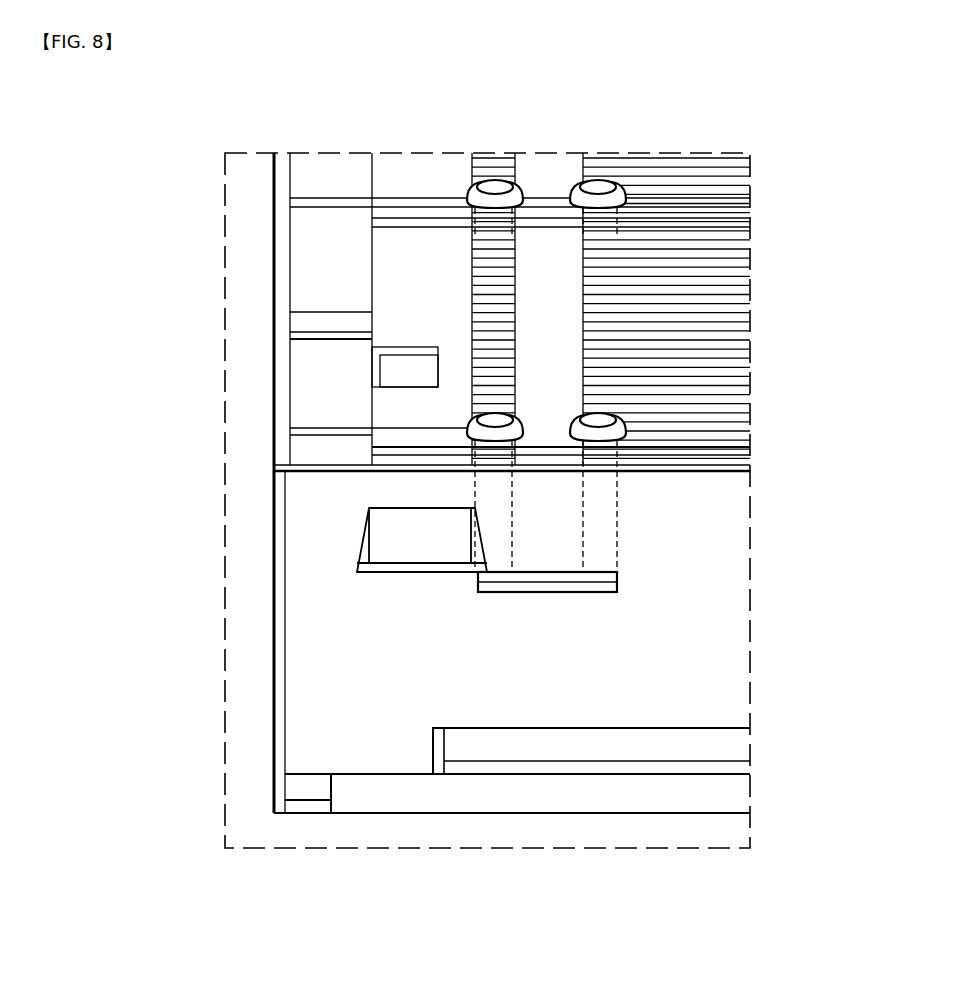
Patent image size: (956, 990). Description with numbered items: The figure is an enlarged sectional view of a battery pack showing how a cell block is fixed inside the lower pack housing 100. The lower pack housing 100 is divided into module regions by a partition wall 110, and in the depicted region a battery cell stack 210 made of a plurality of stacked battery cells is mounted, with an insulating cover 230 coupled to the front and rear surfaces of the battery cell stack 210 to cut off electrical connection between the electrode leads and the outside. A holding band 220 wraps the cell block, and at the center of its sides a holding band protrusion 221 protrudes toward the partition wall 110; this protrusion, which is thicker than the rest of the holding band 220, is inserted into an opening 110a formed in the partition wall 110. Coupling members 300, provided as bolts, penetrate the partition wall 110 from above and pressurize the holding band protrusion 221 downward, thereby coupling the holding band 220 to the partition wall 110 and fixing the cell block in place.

The lower pack housing 100 is at (463, 795).
The partition wall 110 is at (640, 695).
The opening 110a is at (537, 582).
The battery cell stack 210 is at (678, 235).
The holding band 220 is at (548, 303).
The holding band protrusion 221 is at (557, 593).
The insulating cover 230 is at (398, 273).
The coupling member 300 is at (598, 185).